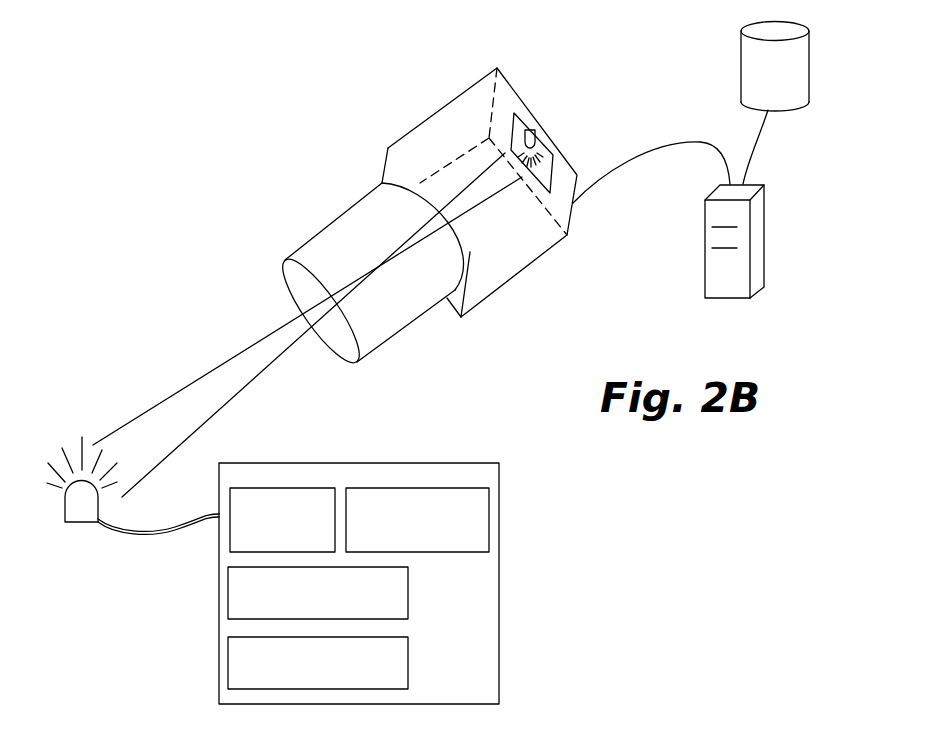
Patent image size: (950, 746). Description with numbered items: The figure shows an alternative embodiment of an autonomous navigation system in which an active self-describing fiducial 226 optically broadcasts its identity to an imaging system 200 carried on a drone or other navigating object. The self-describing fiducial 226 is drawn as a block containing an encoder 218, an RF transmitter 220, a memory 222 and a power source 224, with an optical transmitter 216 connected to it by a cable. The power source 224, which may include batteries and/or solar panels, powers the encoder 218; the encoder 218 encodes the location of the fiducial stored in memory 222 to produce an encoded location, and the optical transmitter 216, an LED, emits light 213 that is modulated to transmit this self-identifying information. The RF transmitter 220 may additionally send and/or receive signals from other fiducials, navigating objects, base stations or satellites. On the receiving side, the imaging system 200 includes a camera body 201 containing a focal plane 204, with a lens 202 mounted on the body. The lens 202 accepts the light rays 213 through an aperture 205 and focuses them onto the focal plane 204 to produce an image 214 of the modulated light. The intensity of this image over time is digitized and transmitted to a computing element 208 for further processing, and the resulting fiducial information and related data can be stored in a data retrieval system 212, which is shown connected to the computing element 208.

The imaging system 200 is at (306, 109).
The camera body 201 is at (433, 143).
The lens 202 is at (322, 238).
The focal plane 204 is at (543, 140).
The aperture 205 is at (295, 280).
The computing element 208 is at (735, 292).
The data retrieval system 212 is at (759, 81).
The light rays 213 is at (208, 375).
The image 214 is at (528, 130).
The optical transmitter 216 is at (80, 517).
The encoder 218 is at (266, 540).
The RF transmitter 220 is at (401, 540).
The memory 222 is at (291, 614).
The power source 224 is at (291, 685).
The self-describing fiducial 226 is at (359, 544).